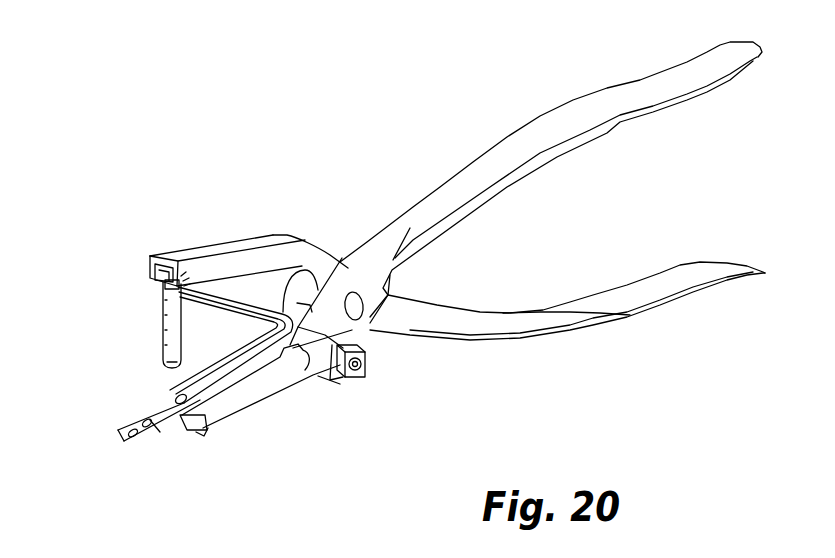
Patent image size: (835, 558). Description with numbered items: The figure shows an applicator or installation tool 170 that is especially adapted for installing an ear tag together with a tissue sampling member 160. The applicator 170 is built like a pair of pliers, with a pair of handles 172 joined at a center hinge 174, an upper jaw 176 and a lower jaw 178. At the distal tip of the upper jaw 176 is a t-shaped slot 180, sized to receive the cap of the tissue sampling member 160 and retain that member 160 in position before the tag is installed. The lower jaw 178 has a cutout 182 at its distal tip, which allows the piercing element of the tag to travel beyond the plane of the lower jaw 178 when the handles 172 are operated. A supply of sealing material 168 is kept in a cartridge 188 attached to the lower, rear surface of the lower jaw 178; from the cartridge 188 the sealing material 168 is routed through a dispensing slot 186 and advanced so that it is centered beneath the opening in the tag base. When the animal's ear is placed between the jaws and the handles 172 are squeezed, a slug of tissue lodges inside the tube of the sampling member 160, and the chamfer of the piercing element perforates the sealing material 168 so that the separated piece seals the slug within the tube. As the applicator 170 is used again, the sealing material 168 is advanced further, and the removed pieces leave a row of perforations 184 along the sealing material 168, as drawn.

The applicator/installation tool 170 is at (425, 147).
The handles 172 is at (587, 120).
The center hinge 174 is at (355, 303).
The upper jaw 176 is at (194, 257).
The lower jaw 178 is at (245, 400).
The t-shaped slot 180 is at (154, 293).
The tissue sampling member 160 is at (157, 351).
The sealing material 168 is at (122, 434).
The cutout 182 is at (175, 434).
The perforations 184 is at (160, 432).
The dispensing slot 186 is at (315, 337).
The cartridge 188 is at (364, 347).